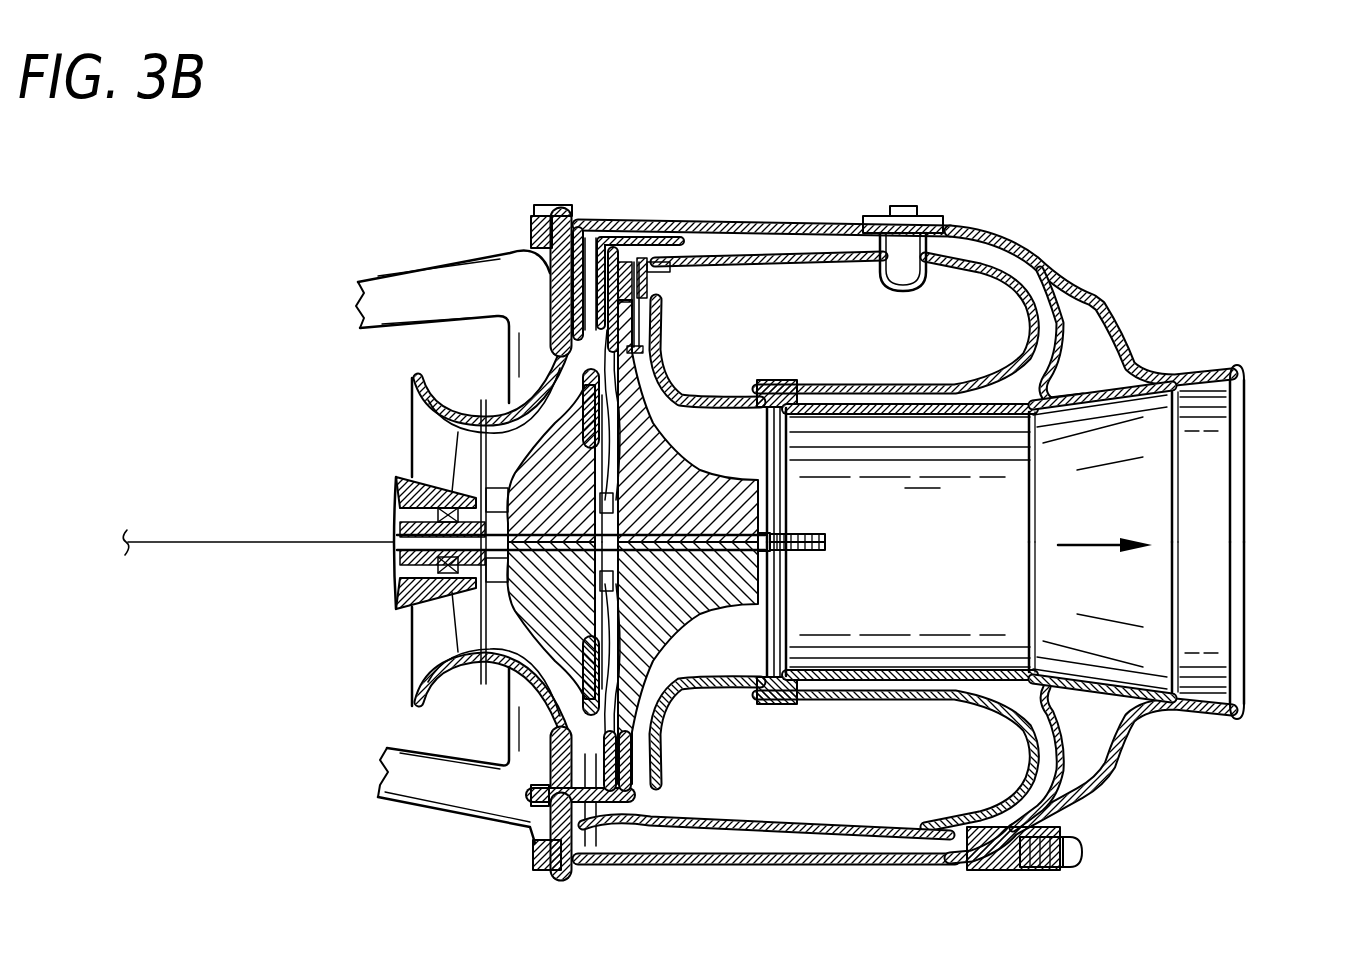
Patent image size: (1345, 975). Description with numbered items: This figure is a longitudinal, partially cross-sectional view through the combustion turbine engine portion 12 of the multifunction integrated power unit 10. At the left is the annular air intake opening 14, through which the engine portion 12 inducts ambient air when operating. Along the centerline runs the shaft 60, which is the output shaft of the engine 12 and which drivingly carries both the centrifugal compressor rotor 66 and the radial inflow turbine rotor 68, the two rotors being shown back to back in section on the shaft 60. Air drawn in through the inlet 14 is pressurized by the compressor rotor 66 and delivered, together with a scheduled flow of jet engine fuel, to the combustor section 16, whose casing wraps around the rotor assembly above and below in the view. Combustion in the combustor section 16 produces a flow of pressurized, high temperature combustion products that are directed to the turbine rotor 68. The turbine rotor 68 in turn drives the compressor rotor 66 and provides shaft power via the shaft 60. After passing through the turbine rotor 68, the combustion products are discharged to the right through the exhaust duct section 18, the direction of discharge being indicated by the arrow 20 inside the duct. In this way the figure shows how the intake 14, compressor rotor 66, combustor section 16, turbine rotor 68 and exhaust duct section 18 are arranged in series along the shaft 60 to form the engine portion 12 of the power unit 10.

The multifunction integrated power unit 10 is at (1166, 217).
The combustion turbine engine portion 12 is at (558, 240).
The annular air intake opening 14 is at (383, 450).
The combustor section 16 is at (797, 222).
The exhaust duct section 18 is at (1230, 475).
The arrow 20 is at (1080, 545).
The shaft 60 is at (398, 548).
The centrifugal compressor rotor 66 is at (545, 490).
The radial inflow turbine rotor 68 is at (693, 480).